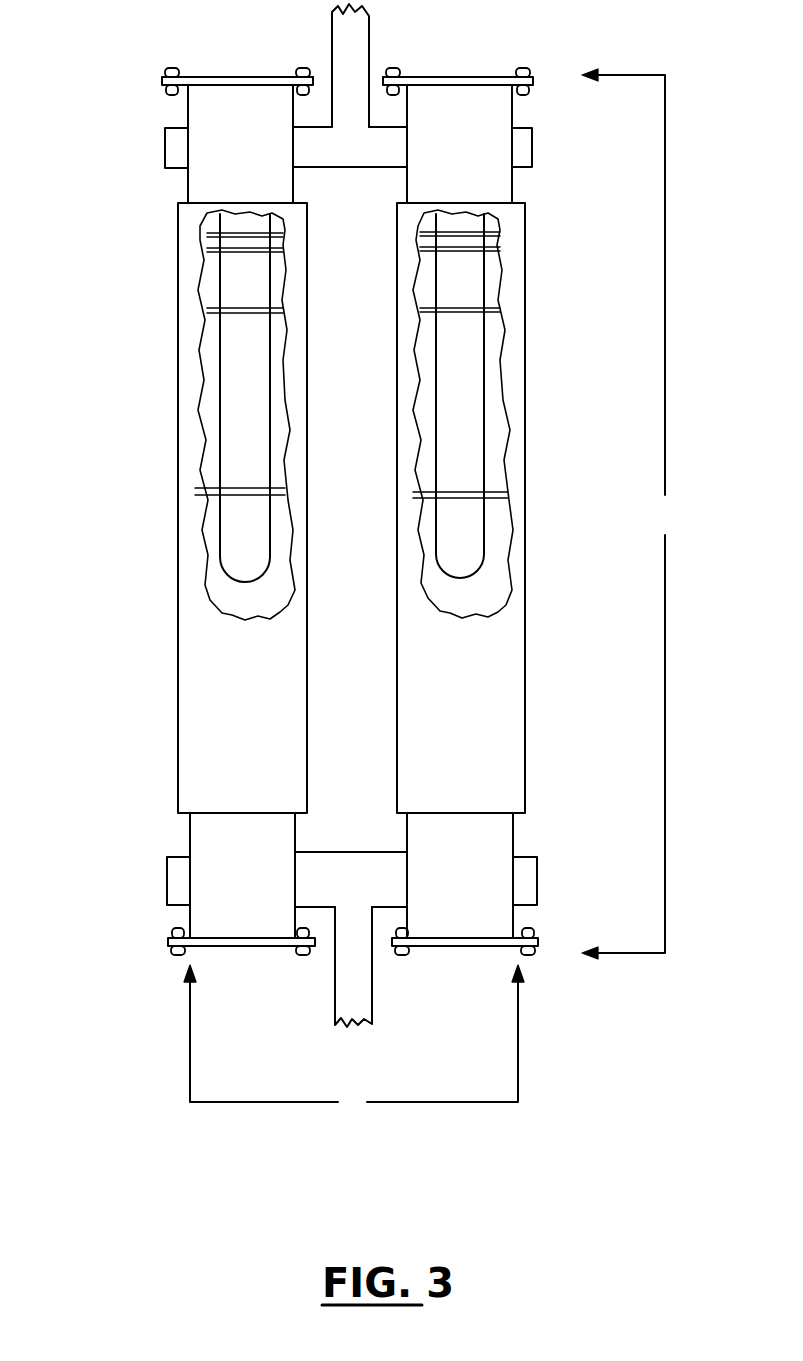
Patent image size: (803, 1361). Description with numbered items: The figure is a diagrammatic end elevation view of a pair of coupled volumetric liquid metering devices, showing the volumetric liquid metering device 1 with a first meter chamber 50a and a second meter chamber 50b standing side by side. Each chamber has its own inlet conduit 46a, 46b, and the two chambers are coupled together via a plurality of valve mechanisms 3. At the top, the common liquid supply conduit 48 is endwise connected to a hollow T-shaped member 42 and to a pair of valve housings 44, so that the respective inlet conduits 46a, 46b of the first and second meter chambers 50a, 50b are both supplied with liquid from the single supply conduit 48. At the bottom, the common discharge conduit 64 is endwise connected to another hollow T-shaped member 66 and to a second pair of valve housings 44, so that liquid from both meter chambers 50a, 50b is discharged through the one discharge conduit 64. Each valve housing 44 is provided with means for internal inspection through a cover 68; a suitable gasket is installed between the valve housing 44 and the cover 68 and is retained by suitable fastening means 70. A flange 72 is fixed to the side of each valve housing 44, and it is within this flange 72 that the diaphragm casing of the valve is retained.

The volumetric liquid metering device 1 is at (629, 514).
The valve mechanisms 3 is at (354, 1042).
The hollow T-shaped member 42 is at (356, 168).
The valve housing 44 is at (233, 125).
The inlet conduit 46a is at (243, 433).
The inlet conduit 46b is at (463, 452).
The liquid supply conduit 48 is at (370, 37).
The first meter chamber 50a is at (272, 747).
The second meter chamber 50b is at (493, 745).
The discharge conduit 64 is at (372, 980).
The hollow T-shaped member 66 is at (337, 852).
The cover 68 is at (252, 948).
The fastening means 70 is at (173, 950).
The flange 72 is at (167, 858).